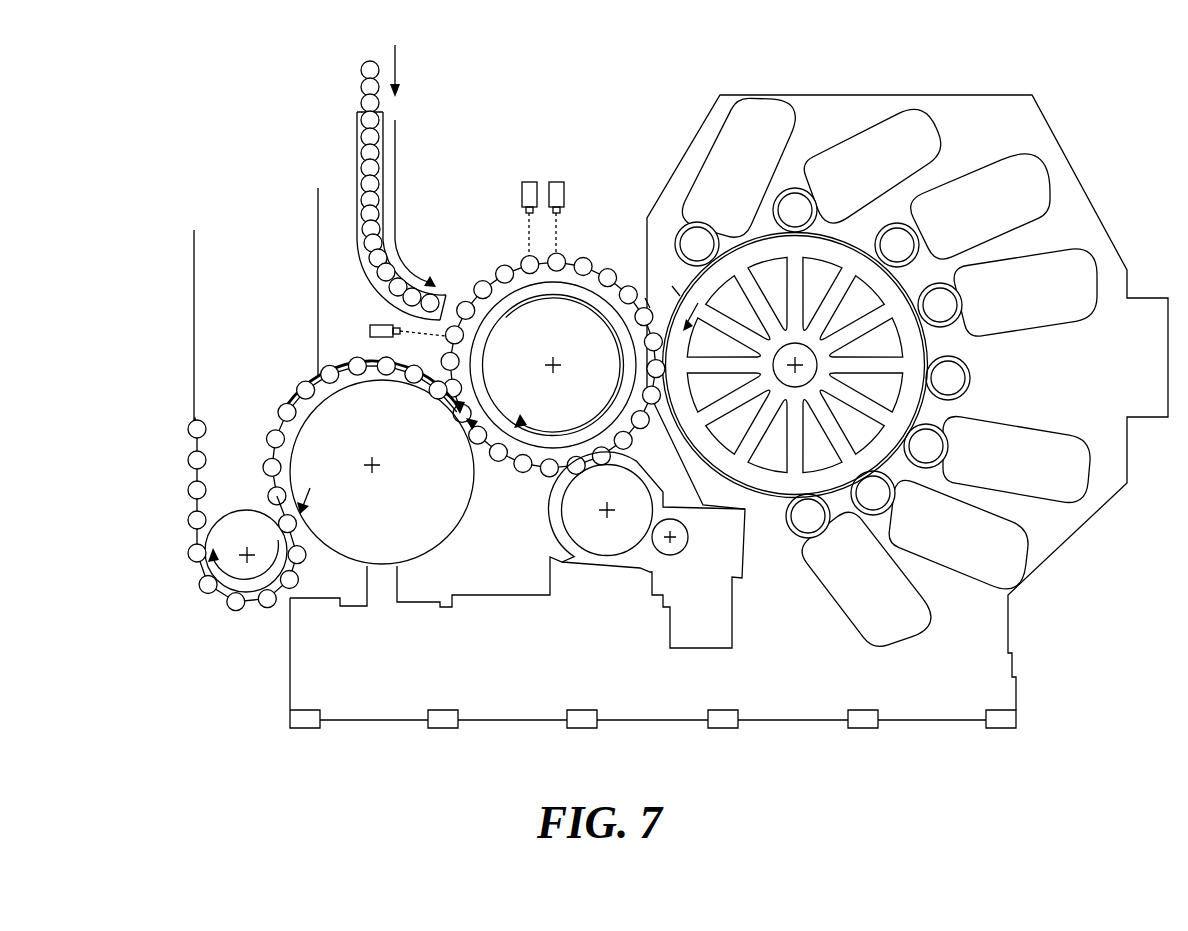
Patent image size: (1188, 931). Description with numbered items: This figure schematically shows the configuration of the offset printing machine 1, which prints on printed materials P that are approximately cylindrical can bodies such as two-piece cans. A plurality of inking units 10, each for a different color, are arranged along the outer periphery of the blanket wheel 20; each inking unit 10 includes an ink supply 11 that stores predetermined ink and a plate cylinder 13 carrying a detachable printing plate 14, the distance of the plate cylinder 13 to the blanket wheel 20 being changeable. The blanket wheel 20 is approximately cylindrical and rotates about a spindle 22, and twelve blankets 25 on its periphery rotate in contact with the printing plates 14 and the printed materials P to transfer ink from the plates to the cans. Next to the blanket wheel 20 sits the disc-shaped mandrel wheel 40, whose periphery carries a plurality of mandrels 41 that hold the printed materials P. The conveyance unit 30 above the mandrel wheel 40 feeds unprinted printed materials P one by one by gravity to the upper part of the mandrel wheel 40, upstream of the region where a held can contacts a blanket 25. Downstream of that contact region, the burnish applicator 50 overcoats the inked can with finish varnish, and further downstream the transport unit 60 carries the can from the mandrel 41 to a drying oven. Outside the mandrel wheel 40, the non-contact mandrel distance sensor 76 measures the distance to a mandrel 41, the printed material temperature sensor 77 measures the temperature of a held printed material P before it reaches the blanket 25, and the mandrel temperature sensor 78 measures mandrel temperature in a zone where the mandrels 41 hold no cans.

The printing machine 1 is at (1080, 71).
The inking unit 10 is at (952, 112).
The ink supply 11 is at (887, 140).
The plate cylinder 13 is at (830, 188).
The printing plate 14 is at (797, 188).
The blanket wheel 20 is at (702, 272).
The spindle 22 is at (676, 290).
The blanket 25 is at (648, 300).
The conveyance unit 30 is at (422, 101).
The mandrel wheel 40 is at (500, 308).
The mandrel 41 is at (445, 360).
The burnish applicator 50 is at (550, 504).
The transport unit 60 is at (308, 589).
The mandrel distance sensor 76 is at (556, 182).
The printed material temperature sensor 77 is at (528, 182).
The mandrel temperature sensor 78 is at (368, 332).
The printed material P is at (361, 71).